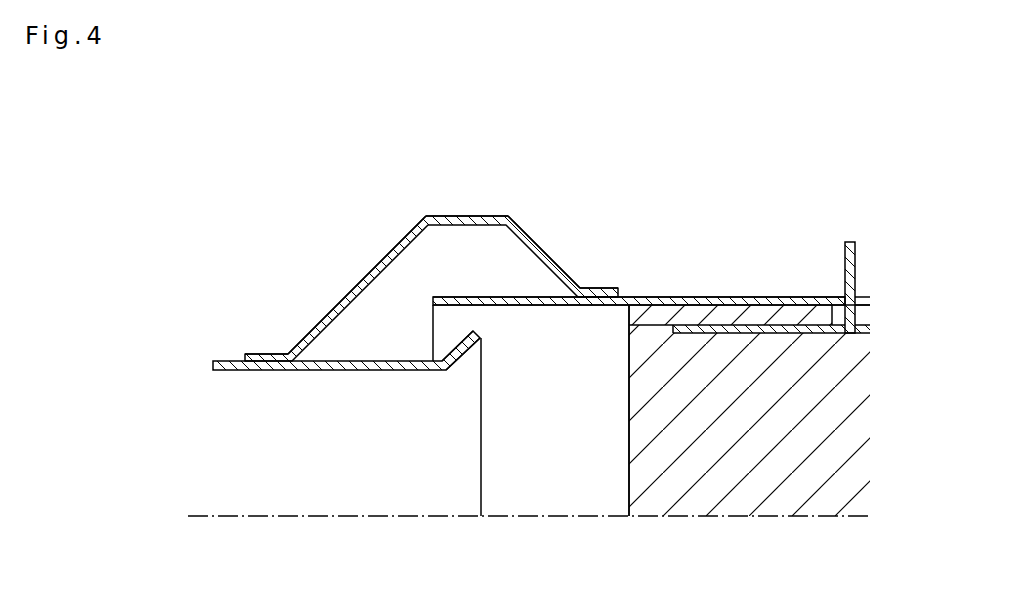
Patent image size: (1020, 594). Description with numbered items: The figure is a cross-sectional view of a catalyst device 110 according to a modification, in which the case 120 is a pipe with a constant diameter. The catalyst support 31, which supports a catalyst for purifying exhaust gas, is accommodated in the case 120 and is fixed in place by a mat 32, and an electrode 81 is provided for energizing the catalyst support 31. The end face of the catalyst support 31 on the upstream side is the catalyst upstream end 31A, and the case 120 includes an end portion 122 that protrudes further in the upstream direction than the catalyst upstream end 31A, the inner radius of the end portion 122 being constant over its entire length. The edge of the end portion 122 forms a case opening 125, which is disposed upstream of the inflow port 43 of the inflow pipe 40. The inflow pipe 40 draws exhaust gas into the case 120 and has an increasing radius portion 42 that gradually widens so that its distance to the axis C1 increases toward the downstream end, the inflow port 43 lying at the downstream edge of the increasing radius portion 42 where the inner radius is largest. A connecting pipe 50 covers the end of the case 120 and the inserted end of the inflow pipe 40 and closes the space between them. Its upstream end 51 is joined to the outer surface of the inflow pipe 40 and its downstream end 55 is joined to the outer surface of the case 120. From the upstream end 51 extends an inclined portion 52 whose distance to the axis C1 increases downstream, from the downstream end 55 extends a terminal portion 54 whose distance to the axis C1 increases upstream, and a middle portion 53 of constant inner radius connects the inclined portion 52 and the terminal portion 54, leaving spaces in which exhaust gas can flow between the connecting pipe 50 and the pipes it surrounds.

The catalyst device 110 is at (717, 140).
The case 120 is at (668, 296).
The end portion 122 is at (555, 307).
The case opening 125 is at (435, 310).
The catalyst support 31 is at (640, 437).
The catalyst upstream end 31A is at (628, 393).
The mat 32 is at (790, 312).
The inflow pipe 40 is at (375, 371).
The increasing radius portion 42 is at (462, 358).
The inflow port 43 is at (482, 457).
The connecting pipe 50 is at (373, 269).
The upstream end 51 is at (262, 354).
The inclined portion 52 is at (323, 318).
The middle portion 53 is at (460, 215).
The terminal portion 54 is at (549, 251).
The downstream end 55 is at (598, 286).
The electrode 81 is at (849, 241).
The axis C1 is at (275, 517).